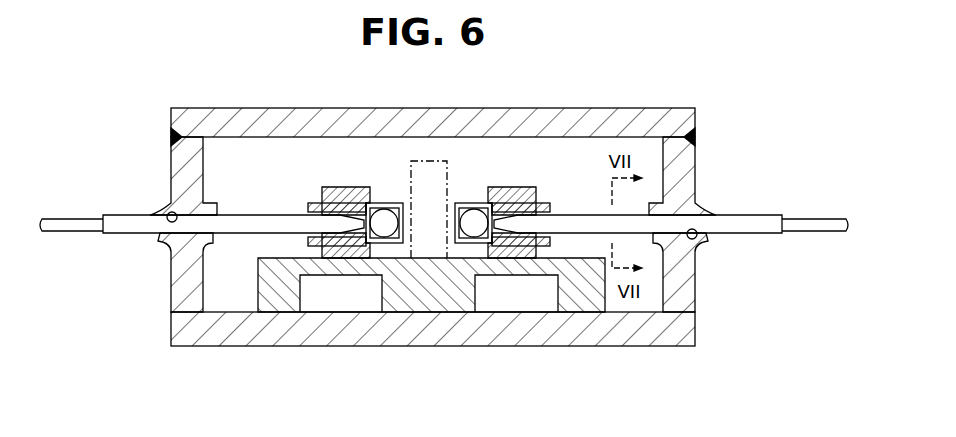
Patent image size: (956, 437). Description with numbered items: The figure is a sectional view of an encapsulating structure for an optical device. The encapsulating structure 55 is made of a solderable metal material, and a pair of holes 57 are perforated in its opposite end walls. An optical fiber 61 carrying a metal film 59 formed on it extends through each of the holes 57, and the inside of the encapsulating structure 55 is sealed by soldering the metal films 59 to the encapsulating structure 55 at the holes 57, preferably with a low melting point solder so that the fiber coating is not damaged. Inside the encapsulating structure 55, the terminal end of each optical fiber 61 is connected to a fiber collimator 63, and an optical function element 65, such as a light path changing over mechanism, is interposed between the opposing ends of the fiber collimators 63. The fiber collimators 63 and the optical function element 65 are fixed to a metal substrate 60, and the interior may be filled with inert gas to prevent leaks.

The encapsulating structure 55 is at (611, 116).
The hole 57 is at (163, 207).
The metal film 59 is at (132, 230).
The substrate 60 is at (432, 298).
The optical fiber 61 is at (60, 232).
The fiber collimator 63 is at (314, 191).
The optical function element 65 is at (426, 156).